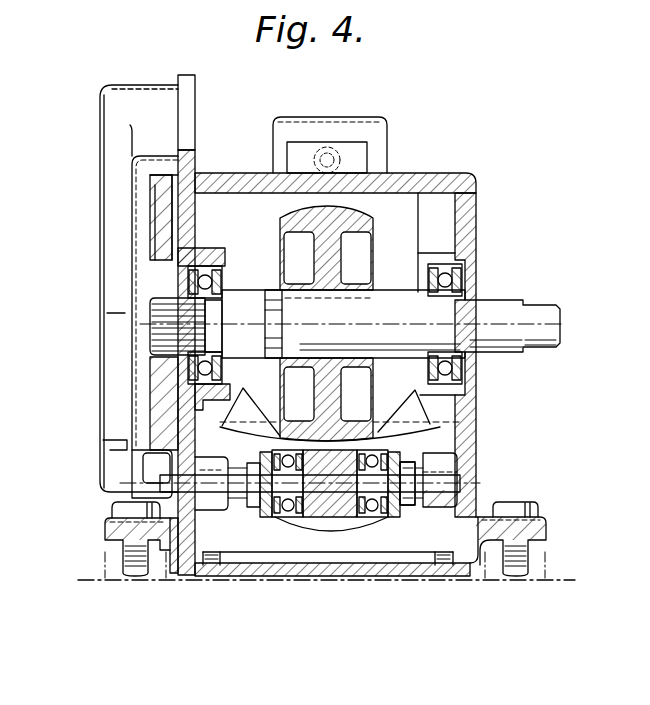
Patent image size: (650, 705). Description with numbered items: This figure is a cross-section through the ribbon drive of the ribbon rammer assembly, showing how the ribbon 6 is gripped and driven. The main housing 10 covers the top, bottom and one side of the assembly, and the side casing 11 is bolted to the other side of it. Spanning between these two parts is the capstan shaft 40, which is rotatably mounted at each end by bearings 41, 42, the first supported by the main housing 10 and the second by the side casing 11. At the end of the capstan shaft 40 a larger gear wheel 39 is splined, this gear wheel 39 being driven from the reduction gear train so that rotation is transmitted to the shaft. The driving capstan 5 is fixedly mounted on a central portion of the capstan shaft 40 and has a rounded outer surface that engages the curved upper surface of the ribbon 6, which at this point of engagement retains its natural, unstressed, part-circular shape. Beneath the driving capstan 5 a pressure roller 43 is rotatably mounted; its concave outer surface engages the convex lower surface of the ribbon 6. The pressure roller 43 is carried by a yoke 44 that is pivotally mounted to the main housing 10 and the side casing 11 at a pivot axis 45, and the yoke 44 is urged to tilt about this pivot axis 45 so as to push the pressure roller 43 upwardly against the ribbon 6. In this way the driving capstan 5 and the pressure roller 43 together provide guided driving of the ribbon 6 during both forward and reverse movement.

The driving capstan 5 is at (368, 220).
The ribbon 6 is at (460, 422).
The main housing 10 is at (196, 160).
The side casing 11 is at (470, 192).
The gear wheel 39 is at (142, 176).
The capstan shaft 40 is at (163, 318).
The bearing 41 is at (188, 270).
The bearing 42 is at (463, 264).
The pressure roller 43 is at (285, 527).
The yoke 44 is at (391, 518).
The pivot axis 45 is at (460, 481).